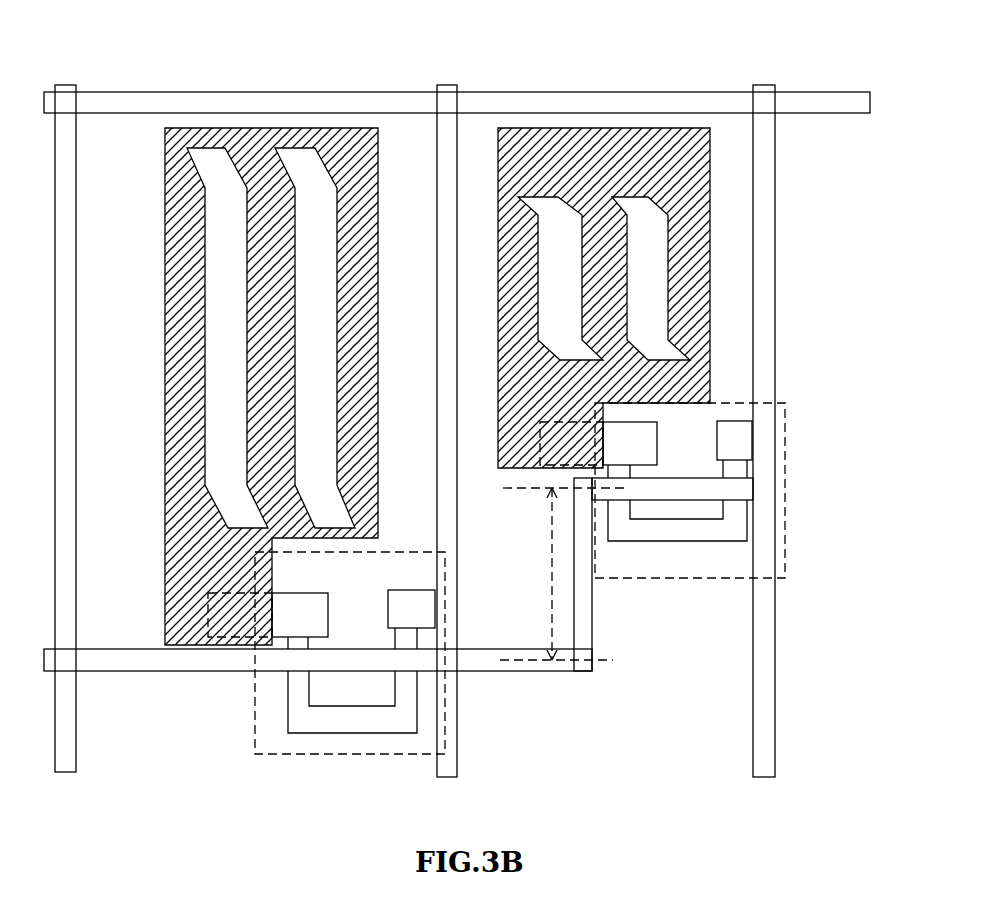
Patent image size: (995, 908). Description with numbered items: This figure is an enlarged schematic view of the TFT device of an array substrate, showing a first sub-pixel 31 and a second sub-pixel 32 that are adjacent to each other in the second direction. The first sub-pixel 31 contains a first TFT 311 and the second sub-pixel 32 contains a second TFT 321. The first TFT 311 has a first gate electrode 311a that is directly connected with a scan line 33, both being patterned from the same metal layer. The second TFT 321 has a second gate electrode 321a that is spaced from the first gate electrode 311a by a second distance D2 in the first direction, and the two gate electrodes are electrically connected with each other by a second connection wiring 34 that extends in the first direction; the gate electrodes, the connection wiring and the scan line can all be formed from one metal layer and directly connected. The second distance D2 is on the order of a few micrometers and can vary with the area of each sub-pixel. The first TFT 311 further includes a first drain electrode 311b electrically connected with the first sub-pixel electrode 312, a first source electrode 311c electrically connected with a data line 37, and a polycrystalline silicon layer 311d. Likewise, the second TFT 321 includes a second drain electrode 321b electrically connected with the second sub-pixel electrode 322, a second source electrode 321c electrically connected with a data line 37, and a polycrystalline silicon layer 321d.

The first sub-pixel 31 is at (135, 148).
The second sub-pixel 32 is at (477, 163).
The scan line 33 is at (158, 658).
The second connection wiring 34 is at (577, 612).
The data line 37 is at (436, 230).
The first sub-pixel electrode 312 is at (192, 148).
The second sub-pixel electrode 322 is at (607, 195).
The first TFT 311 is at (308, 747).
The first gate electrode 311a is at (365, 658).
The first drain electrode 311b is at (307, 608).
The first source electrode 311c is at (417, 608).
The polycrystalline silicon layer 311d is at (352, 715).
The second TFT 321 is at (627, 563).
The second gate electrode 321a is at (677, 492).
The second drain electrode 321b is at (633, 443).
The second source electrode 321c is at (742, 440).
The polycrystalline silicon layer 321d is at (695, 533).
The second distance D2 is at (563, 574).